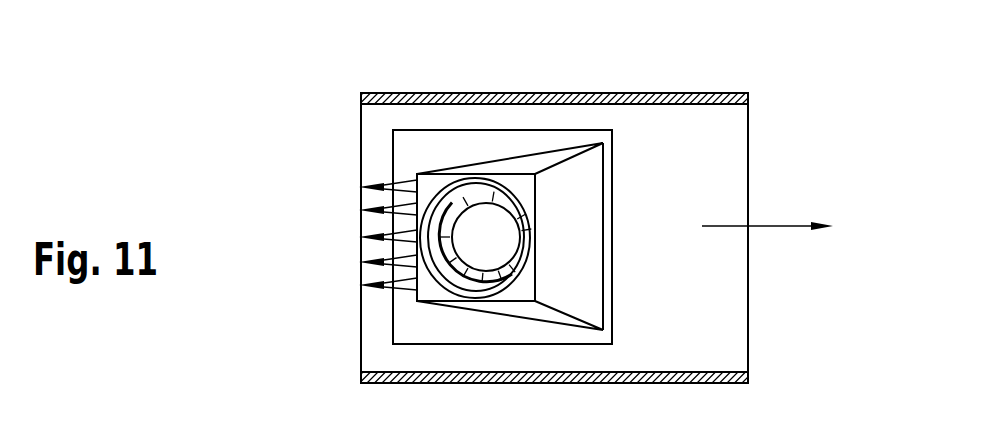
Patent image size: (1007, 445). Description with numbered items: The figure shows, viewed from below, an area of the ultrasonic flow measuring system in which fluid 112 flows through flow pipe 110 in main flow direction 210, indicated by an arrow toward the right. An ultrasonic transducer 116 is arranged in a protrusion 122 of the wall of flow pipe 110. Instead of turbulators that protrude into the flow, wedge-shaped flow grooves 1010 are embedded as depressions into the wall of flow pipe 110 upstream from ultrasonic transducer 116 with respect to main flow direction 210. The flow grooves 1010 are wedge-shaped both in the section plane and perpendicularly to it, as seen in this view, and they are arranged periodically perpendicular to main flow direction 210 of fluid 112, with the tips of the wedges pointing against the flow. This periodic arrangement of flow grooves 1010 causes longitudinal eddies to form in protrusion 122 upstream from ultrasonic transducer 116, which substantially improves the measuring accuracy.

The flow pipe 110 is at (678, 93).
The protrusion 122 is at (560, 200).
The ultrasonic transducer 116 is at (478, 245).
The flow grooves 1010 is at (384, 187).
The fluid 112 is at (393, 357).
The main flow direction 210 is at (778, 224).